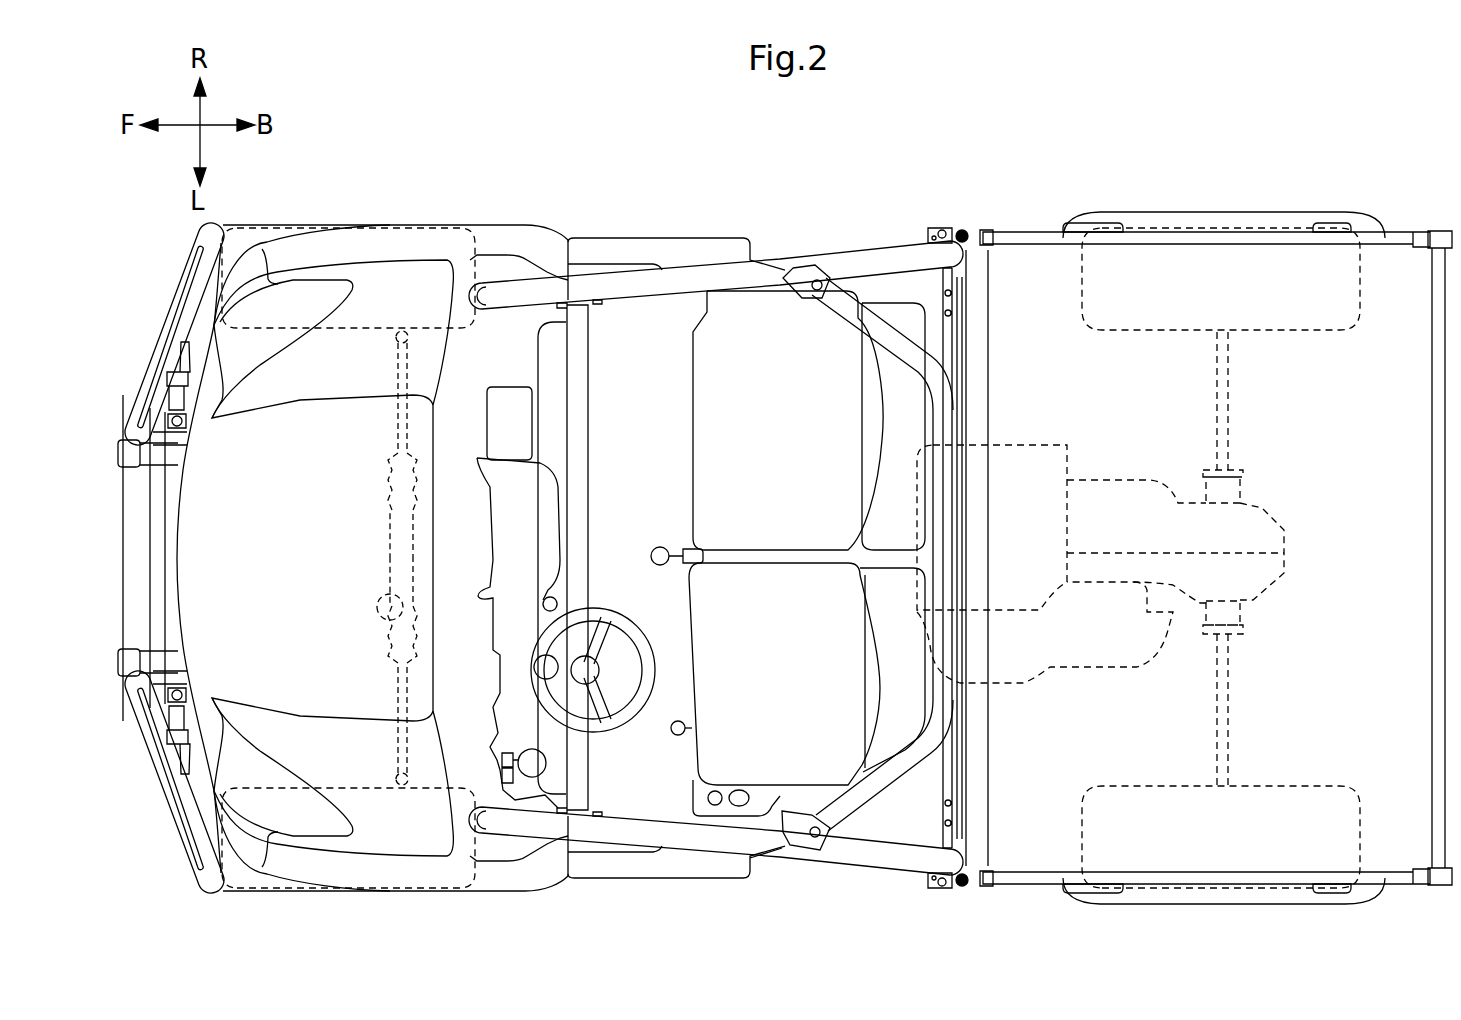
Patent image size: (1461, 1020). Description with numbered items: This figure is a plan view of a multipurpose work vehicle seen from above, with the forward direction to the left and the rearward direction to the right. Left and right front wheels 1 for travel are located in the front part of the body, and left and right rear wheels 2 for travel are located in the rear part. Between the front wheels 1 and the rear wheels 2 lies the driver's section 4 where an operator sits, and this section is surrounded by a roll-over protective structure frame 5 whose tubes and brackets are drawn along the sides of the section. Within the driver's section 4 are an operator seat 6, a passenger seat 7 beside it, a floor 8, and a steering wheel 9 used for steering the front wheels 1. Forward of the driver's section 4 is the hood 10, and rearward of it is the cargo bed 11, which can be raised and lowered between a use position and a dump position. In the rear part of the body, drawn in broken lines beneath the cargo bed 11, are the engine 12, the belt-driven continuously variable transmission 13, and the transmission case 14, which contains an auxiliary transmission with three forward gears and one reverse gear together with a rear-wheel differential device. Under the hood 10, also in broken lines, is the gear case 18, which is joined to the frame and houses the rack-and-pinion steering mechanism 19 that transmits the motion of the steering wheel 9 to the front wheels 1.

The front wheels 1 is at (308, 225).
The rear wheels 2 is at (1222, 228).
The driver's section 4 is at (650, 802).
The roll-over protective structure (ROPS) frame 5 is at (846, 255).
The operator seat 6 is at (756, 772).
The passenger seat 7 is at (765, 318).
The floor 8 is at (660, 320).
The steering wheel 9 is at (617, 605).
The hood 10 is at (414, 285).
The cargo bed 11 is at (1398, 275).
The engine 12 is at (1010, 445).
The continuously variable transmission 13 is at (1023, 685).
The transmission case 14 is at (1258, 512).
The gear case 18 is at (384, 600).
The steering mechanism 19 is at (328, 558).